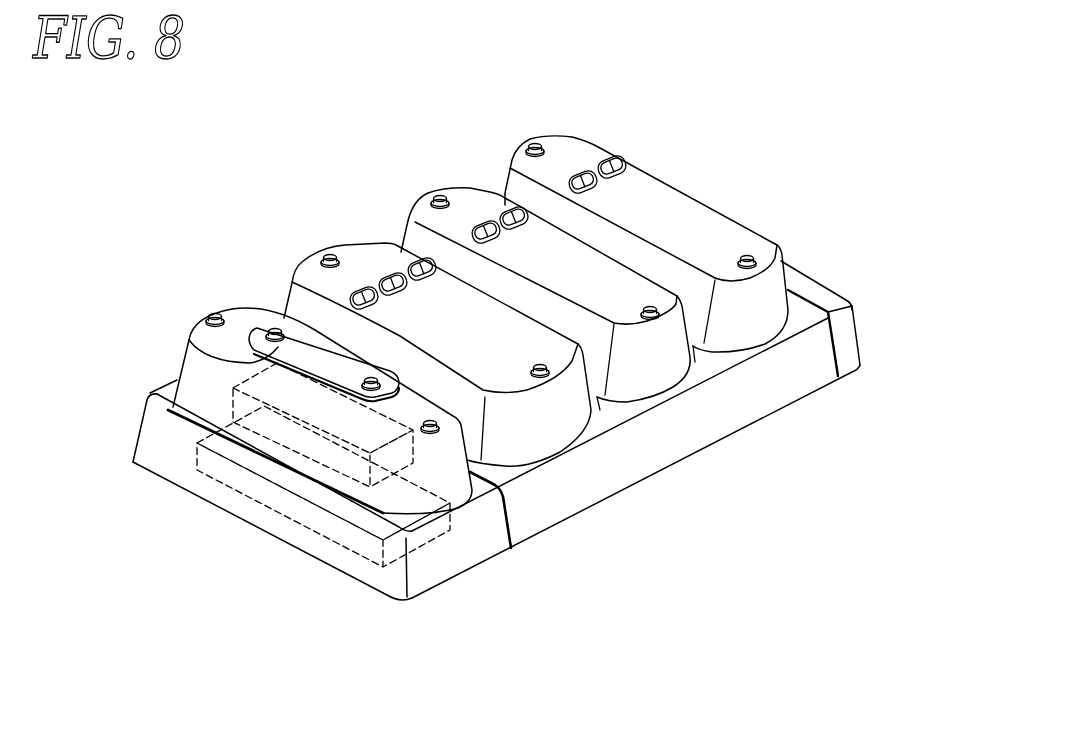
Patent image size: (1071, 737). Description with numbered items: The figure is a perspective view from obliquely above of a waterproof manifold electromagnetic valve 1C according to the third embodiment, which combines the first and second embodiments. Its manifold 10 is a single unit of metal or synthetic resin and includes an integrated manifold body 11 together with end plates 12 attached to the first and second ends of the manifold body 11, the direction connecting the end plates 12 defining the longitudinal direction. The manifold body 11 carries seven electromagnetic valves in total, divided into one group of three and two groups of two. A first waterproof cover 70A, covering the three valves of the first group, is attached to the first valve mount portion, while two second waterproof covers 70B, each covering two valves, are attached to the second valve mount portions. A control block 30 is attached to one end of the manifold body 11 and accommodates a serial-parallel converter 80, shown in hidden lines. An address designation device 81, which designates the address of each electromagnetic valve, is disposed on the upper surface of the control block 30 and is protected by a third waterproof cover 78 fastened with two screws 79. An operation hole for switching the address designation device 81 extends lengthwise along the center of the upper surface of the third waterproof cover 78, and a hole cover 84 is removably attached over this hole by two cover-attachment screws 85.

The manifold electromagnetic valve 1C is at (321, 84).
The manifold 10 is at (541, 454).
The manifold body 11 is at (787, 373).
The end plate 12 is at (847, 338).
The control block 30 is at (443, 557).
The first waterproof cover 70A is at (348, 219).
The second waterproof cover 70B is at (449, 168).
The third waterproof cover 78 is at (348, 413).
The screw 79 is at (214, 311).
The serial-parallel converter 80 is at (343, 530).
The address designation device 81 is at (318, 452).
The hole cover 84 is at (250, 363).
The cover-attachment screw 85 is at (274, 328).